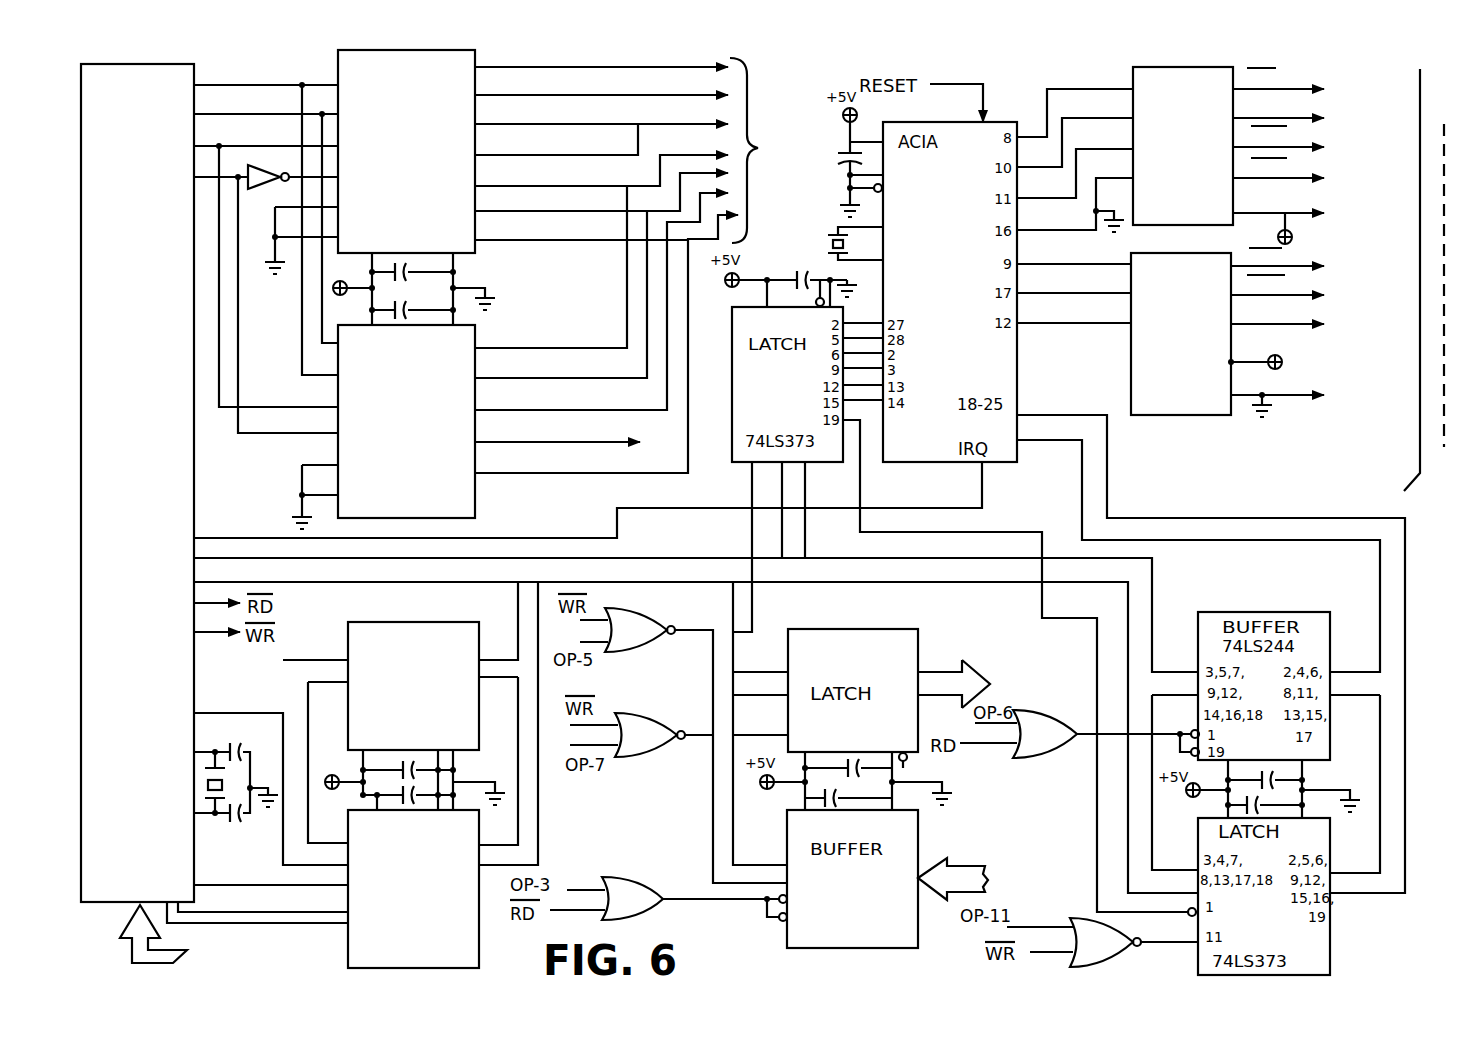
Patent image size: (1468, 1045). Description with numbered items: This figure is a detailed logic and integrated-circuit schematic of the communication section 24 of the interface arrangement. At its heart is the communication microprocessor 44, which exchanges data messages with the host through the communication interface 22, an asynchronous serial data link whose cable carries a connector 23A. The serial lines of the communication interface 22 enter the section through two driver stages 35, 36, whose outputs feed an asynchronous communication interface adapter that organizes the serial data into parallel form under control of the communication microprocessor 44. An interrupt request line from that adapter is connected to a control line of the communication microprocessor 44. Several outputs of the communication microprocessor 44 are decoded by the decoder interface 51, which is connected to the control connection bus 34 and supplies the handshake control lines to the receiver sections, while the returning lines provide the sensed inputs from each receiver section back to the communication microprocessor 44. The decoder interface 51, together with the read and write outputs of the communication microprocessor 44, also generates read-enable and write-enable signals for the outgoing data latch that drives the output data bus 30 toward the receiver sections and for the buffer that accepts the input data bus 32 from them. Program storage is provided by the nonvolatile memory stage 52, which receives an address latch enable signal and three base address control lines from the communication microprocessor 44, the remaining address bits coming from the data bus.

The communication section microprocessor 44 is at (124, 137).
The communication section 24 is at (680, 61).
The control connection bus 34 is at (760, 152).
The driver stage 35 is at (1133, 76).
The driver stage 36 is at (1198, 415).
The connector 23A is at (1420, 69).
The communication interface 22 is at (1448, 113).
The decoder interface 51 is at (506, 325).
The nonvolatile memory stage 52 is at (486, 689).
The data bus 30 is at (972, 668).
The data bus 32 is at (937, 861).